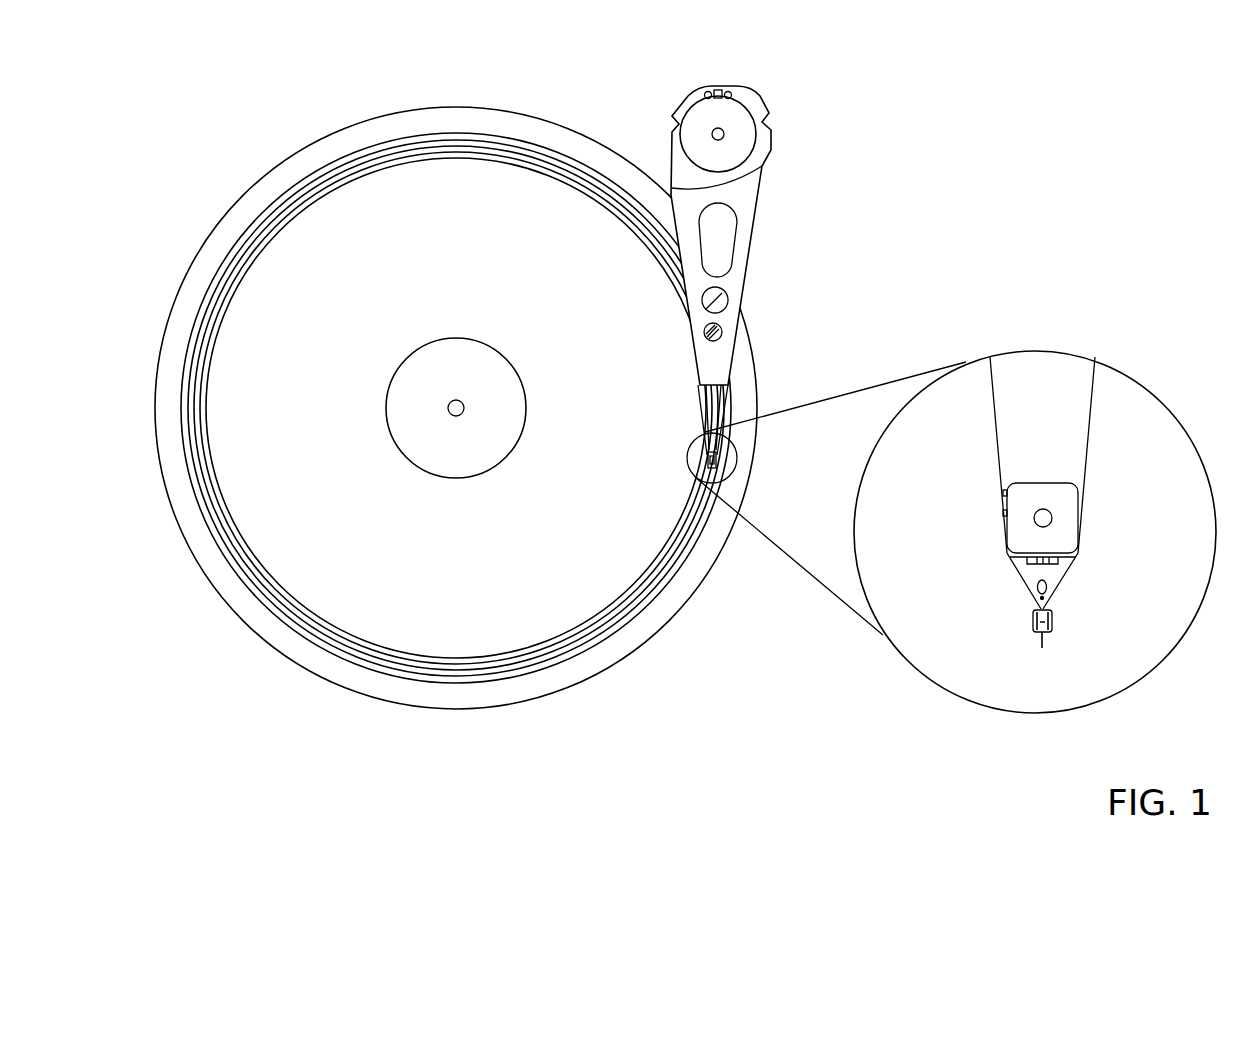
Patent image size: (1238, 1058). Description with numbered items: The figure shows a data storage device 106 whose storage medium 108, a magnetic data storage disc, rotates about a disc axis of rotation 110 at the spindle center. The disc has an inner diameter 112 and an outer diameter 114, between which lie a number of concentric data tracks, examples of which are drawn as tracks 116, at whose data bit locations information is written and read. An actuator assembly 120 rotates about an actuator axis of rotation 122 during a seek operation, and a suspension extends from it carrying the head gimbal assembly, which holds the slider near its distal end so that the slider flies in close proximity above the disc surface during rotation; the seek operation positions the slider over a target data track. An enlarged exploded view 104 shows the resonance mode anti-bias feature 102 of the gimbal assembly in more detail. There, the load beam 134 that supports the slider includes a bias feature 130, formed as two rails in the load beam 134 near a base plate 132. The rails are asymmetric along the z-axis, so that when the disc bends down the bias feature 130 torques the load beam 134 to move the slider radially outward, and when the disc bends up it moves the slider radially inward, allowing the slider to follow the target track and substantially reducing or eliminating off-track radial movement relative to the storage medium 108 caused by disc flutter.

The resonance mode anti-bias feature 102 is at (1066, 620).
The exploded view 104 is at (900, 497).
The data storage device 106 is at (422, 371).
The storage medium 108 is at (522, 110).
The disc axis of rotation 110 is at (449, 403).
The inner diameter 112 is at (427, 343).
The outer diameter 114 is at (347, 152).
The tracks 116 is at (168, 368).
The actuator assembly 120 is at (900, 399).
The actuator axis of rotation 122 is at (725, 131).
The bias feature 130 is at (1093, 560).
The base plate 132 is at (1080, 512).
The load beam 134 is at (1082, 590).